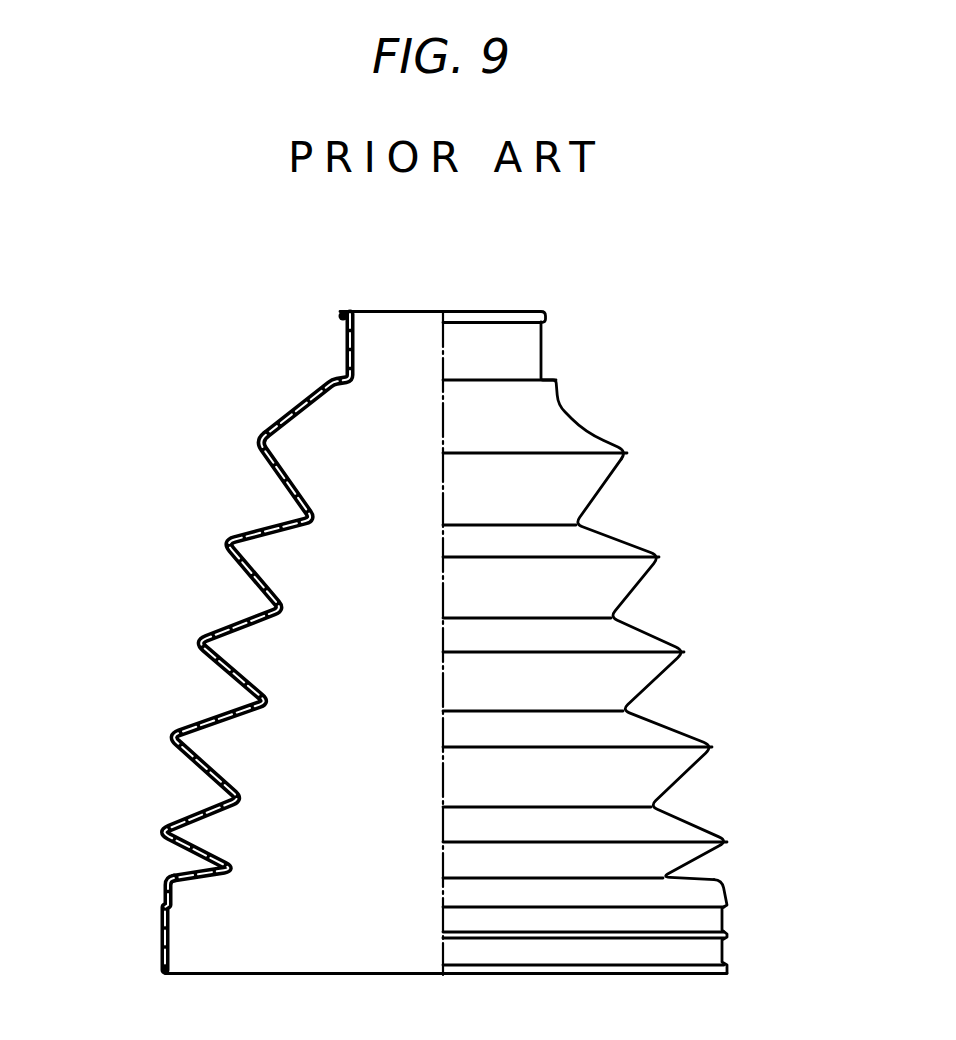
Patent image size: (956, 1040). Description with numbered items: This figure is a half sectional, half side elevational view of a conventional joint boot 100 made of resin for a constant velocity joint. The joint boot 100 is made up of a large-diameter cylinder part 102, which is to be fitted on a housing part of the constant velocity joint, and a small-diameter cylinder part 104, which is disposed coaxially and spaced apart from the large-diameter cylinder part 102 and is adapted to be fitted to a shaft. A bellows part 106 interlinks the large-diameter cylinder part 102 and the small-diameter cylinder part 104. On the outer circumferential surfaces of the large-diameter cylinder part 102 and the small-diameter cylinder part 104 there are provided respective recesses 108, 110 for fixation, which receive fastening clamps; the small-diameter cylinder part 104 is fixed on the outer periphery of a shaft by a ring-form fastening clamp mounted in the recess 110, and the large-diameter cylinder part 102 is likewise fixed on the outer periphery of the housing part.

The joint boot 100 is at (472, 272).
The large-diameter cylinder part 102 is at (725, 952).
The small-diameter cylinder part 104 is at (525, 352).
The bellows part 106 is at (680, 640).
The recess for fixation 108 is at (160, 945).
The recess for fixation 110 is at (343, 338).